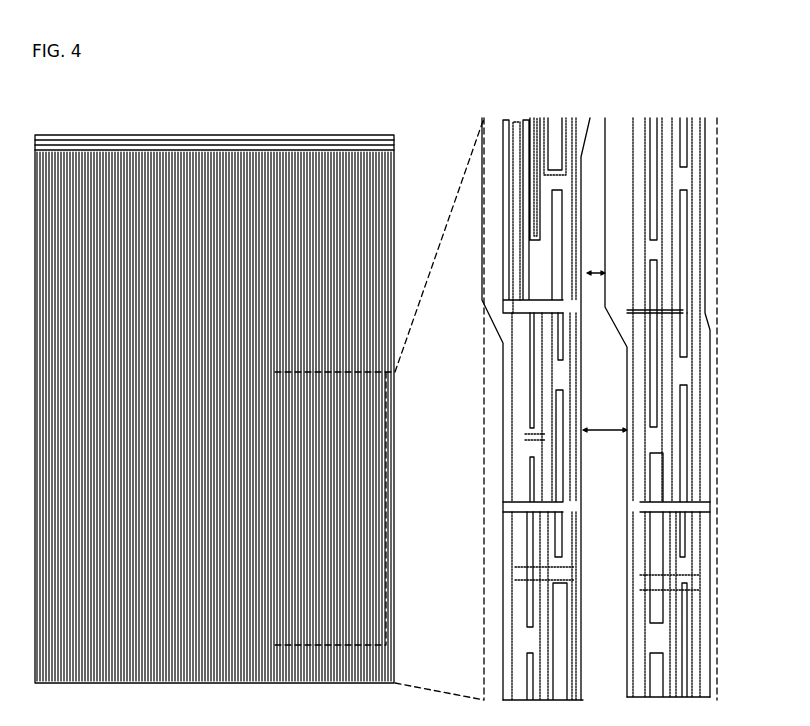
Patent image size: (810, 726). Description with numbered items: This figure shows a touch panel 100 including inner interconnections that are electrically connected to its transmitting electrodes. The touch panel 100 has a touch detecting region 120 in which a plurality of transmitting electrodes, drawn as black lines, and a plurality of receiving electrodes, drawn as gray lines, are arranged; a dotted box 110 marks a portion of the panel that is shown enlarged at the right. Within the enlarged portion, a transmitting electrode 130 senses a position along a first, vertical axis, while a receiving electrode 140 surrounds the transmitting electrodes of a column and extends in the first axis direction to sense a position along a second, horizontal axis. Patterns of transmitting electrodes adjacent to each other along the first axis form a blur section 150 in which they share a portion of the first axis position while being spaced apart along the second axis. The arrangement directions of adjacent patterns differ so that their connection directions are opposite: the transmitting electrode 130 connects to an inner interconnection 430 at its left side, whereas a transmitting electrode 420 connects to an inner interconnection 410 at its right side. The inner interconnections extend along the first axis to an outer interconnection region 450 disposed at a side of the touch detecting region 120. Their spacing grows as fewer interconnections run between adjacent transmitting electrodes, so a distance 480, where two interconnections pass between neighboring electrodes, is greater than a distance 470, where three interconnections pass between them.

The touch panel 100 is at (240, 112).
The dotted box 110 is at (387, 558).
The touch detecting region 120 is at (390, 145).
The transmitting electrode 130 is at (685, 217).
The receiving electrode 140 is at (700, 427).
The blur section 150 is at (687, 587).
The inner interconnection 410 is at (707, 265).
The transmitting electrode 420 is at (687, 397).
The inner interconnection 430 is at (625, 137).
The outer interconnection region 450 is at (313, 133).
The distance 470 is at (597, 277).
The distance 480 is at (603, 433).